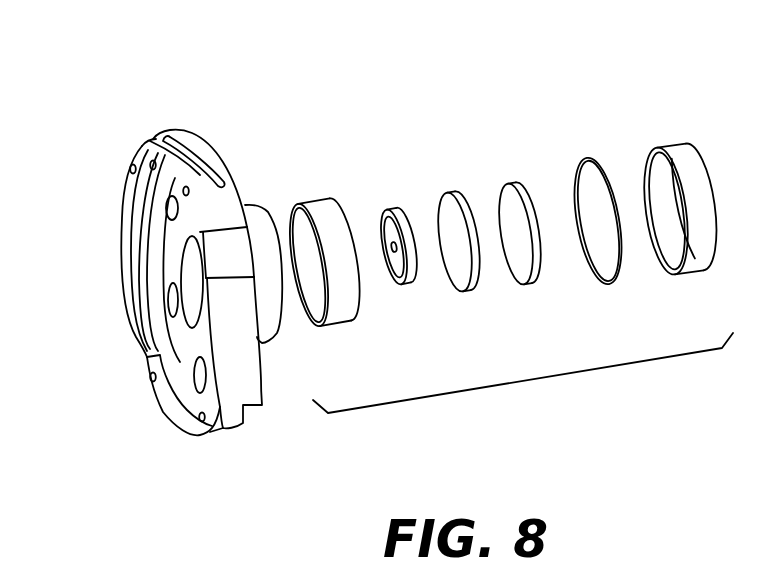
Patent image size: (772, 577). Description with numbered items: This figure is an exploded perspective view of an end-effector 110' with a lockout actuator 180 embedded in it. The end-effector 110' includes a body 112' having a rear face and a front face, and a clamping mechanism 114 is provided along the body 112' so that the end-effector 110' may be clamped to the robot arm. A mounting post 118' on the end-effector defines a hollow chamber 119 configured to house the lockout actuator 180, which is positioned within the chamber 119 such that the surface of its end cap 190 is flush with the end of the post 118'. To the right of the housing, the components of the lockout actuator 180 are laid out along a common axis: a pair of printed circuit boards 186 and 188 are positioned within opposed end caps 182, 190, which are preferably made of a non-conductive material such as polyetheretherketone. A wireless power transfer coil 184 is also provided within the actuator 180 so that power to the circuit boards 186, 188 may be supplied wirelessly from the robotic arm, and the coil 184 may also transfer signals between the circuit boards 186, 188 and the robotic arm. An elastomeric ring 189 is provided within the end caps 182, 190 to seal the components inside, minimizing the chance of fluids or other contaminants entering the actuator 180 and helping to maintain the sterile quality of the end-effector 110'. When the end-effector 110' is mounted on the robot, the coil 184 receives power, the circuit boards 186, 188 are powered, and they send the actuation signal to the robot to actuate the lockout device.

The end-effector 110' is at (376, 229).
The body 112' is at (120, 287).
The clamping mechanism 114 is at (207, 148).
The mounting post 118' is at (266, 244).
The hollow chamber 119 is at (182, 297).
The lockout actuator 180 is at (538, 378).
The end cap 182 is at (328, 220).
The wireless power transfer coil 184 is at (388, 223).
The printed circuit board 186 is at (460, 272).
The printed circuit board 188 is at (520, 260).
The elastomeric ring 189 is at (588, 160).
The end cap 190 is at (683, 163).